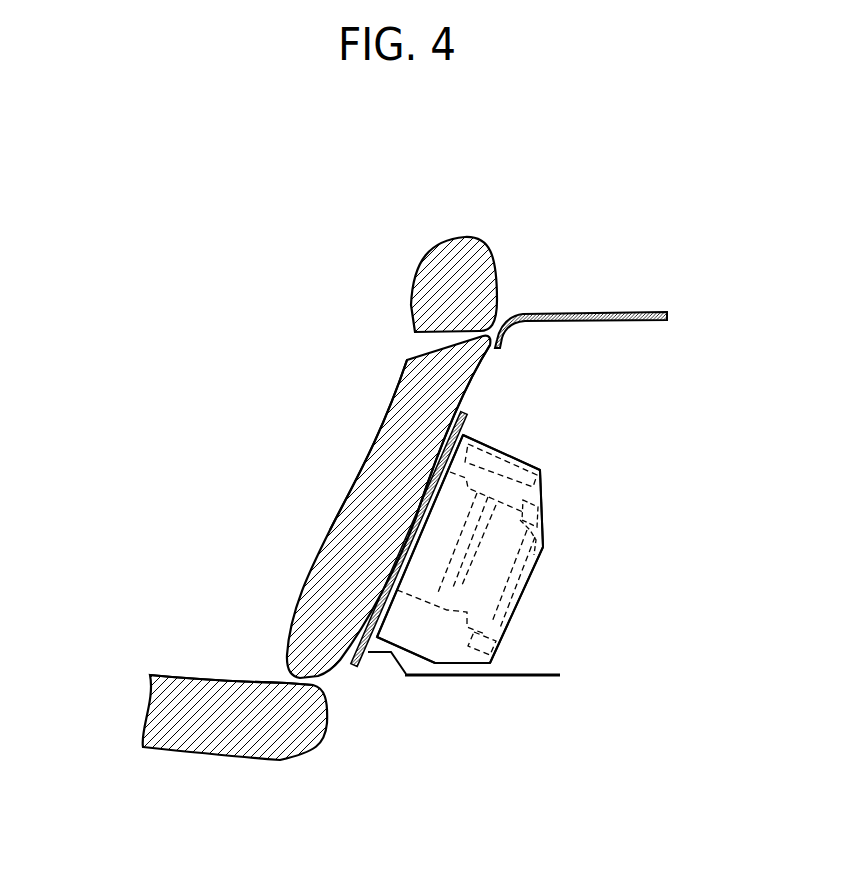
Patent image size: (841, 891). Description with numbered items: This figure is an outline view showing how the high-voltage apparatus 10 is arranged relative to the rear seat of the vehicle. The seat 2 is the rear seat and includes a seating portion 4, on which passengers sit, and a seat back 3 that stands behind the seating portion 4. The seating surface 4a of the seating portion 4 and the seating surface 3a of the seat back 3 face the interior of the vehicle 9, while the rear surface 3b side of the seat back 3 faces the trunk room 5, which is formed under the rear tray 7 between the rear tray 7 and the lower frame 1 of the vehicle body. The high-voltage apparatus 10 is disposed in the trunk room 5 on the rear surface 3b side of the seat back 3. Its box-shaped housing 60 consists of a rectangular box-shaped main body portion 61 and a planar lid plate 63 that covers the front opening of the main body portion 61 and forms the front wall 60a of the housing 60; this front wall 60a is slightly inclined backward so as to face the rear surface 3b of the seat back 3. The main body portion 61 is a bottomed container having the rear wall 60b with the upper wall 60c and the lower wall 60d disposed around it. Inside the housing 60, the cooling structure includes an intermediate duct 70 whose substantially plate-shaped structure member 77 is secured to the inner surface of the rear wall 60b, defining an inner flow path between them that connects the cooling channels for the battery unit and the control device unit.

The lower frame 1 is at (527, 668).
The seat 2 is at (356, 498).
The seat back 3 is at (413, 507).
The seating surface of seat back 3a is at (380, 447).
The rear surface of seat back 3b is at (466, 394).
The seating portion 4 is at (235, 666).
The seating surface of seating portion 4a is at (257, 680).
The trunk room 5 is at (736, 496).
The rear tray 7 is at (593, 312).
The vehicle 9 is at (198, 469).
The high-voltage apparatus 10 is at (443, 570).
The housing 60 is at (514, 570).
The front wall 60a is at (398, 563).
The rear wall 60b is at (505, 633).
The upper wall 60c is at (510, 455).
The lower wall 60d is at (413, 656).
The main body portion 61 is at (522, 607).
The lid plate 63 is at (407, 533).
The intermediate duct 70 is at (520, 548).
The structure member 77 is at (545, 546).